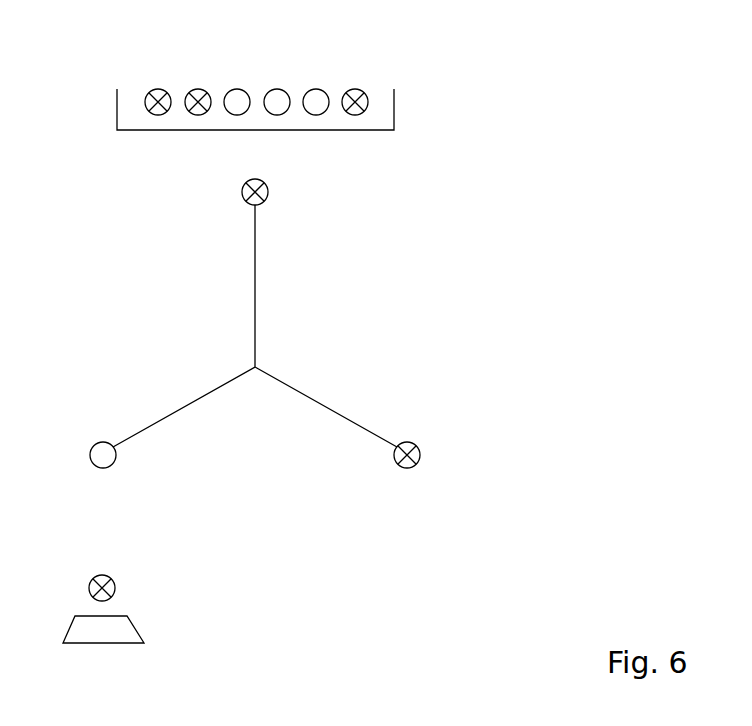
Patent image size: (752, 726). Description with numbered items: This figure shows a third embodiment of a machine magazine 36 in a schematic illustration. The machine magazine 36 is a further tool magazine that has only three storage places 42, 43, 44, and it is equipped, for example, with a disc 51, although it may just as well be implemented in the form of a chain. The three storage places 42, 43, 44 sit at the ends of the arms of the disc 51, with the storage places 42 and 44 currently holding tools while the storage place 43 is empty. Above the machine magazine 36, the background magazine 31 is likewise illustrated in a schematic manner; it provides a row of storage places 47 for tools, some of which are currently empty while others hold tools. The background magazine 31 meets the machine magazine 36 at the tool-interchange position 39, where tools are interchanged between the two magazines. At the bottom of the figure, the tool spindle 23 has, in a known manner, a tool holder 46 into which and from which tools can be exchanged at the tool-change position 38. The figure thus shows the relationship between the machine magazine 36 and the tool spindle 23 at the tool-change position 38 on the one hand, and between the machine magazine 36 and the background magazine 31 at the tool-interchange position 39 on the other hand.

The background magazine 31 is at (394, 110).
The storage places 47 is at (325, 92).
The storage place 44 is at (242, 190).
The disc 51 is at (322, 402).
The storage place 43 is at (112, 464).
The storage place 42 is at (417, 447).
The tool-interchange position 39 is at (410, 176).
The machine magazine 36 is at (410, 321).
The tool-change position 38 is at (157, 526).
The tool holder 46 is at (115, 585).
The tool spindle 23 is at (102, 628).